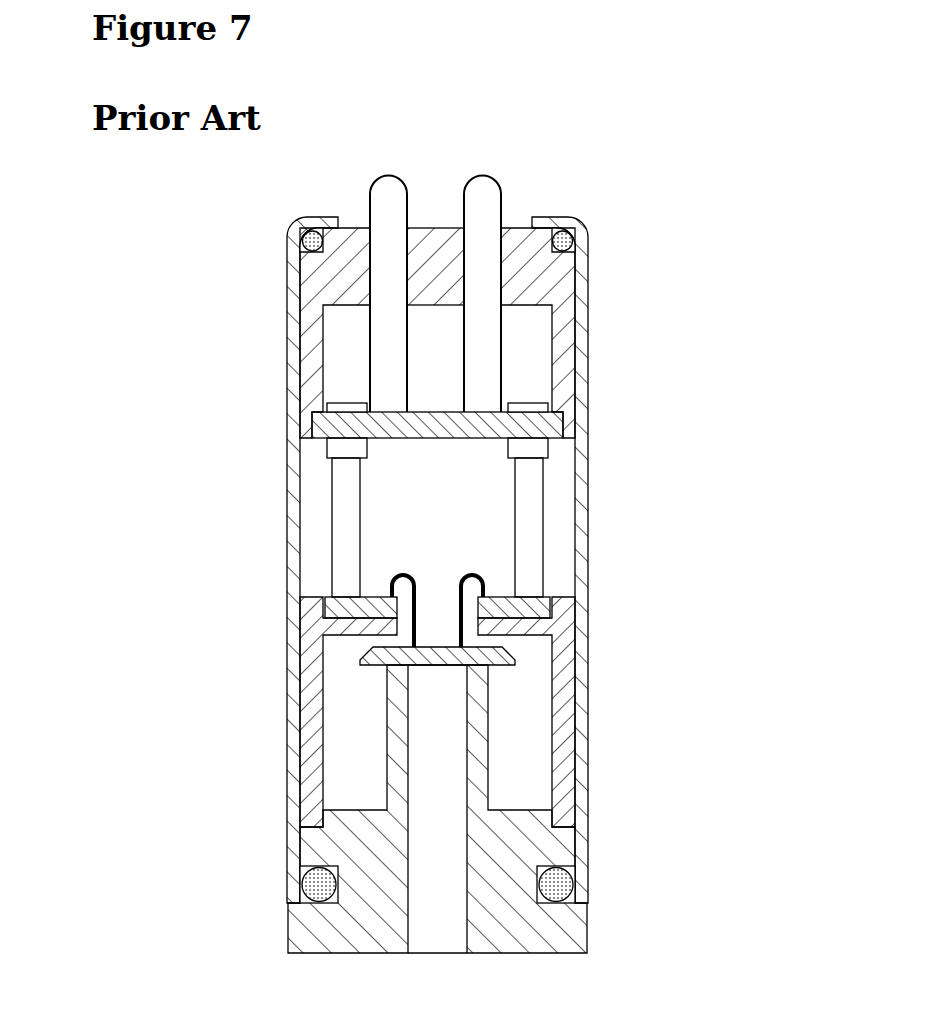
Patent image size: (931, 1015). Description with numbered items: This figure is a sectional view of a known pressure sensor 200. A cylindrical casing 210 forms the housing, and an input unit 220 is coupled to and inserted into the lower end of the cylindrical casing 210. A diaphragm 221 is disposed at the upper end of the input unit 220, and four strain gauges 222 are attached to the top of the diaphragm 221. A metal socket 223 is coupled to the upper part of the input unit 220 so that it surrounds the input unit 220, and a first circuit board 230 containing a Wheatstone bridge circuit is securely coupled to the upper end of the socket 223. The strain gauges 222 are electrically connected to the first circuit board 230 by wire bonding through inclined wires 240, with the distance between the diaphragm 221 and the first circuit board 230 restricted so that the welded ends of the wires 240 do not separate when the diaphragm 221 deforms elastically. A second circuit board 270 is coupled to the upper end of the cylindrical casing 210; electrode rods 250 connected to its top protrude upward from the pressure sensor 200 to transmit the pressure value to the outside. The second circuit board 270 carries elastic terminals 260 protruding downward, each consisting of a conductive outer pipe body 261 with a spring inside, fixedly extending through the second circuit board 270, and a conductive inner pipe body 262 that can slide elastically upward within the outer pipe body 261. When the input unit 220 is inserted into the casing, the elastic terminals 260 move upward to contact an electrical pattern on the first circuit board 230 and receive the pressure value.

The pressure sensor 200 is at (736, 130).
The cylindrical casing 210 is at (577, 228).
The input unit 220 is at (452, 775).
The diaphragm 221 is at (373, 648).
The strain gauges 222 is at (467, 645).
The socket 223 is at (565, 725).
The first circuit board 230 is at (525, 597).
The wires 240 is at (400, 572).
The electrode rods 250 is at (480, 183).
The elastic terminals 260 is at (332, 515).
The outer pipe body 261 is at (330, 443).
The inner pipe body 262 is at (337, 503).
The second circuit board 270 is at (565, 422).